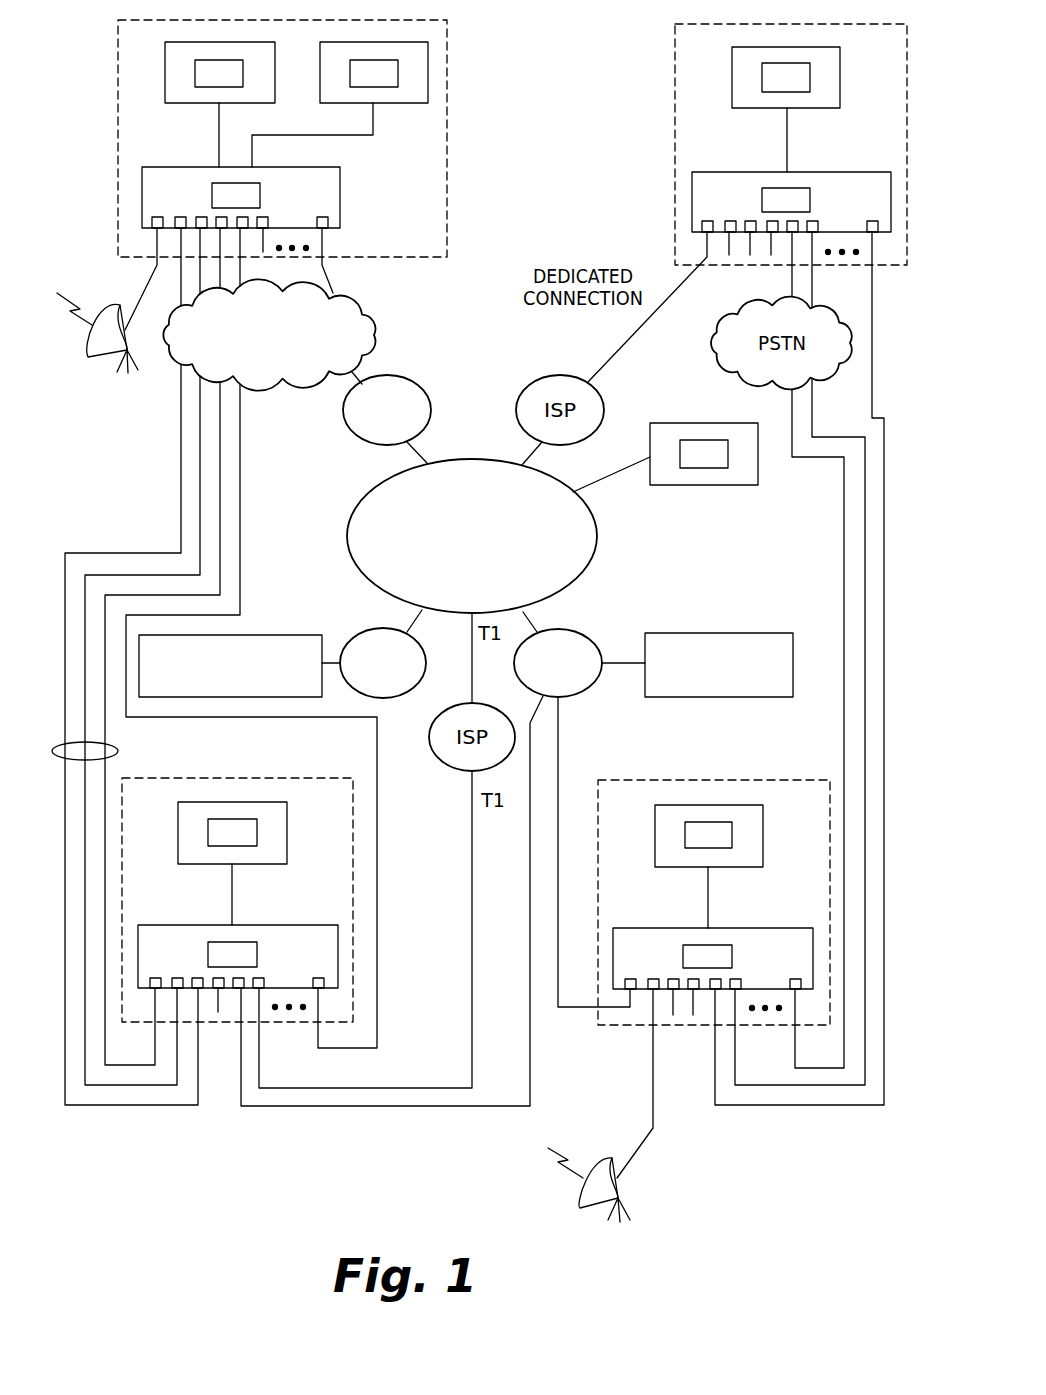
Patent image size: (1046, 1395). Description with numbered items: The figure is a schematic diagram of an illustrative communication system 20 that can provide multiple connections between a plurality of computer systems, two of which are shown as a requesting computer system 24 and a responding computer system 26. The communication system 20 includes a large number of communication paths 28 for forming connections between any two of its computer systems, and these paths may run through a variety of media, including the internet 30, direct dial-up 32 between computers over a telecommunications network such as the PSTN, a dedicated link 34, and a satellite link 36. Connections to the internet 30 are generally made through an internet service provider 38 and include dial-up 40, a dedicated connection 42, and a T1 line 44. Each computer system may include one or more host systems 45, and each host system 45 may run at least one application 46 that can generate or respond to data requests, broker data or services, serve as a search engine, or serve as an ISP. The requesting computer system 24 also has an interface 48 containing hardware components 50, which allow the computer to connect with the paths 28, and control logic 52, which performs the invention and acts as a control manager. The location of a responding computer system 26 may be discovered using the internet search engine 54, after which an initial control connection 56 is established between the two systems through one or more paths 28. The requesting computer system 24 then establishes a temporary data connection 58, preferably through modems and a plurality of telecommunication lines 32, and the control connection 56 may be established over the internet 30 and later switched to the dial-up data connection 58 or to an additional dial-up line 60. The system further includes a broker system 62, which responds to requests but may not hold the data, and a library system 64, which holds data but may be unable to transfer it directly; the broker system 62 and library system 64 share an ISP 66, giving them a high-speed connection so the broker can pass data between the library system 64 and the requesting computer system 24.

The communication system 20 is at (130, 1178).
The requesting computer system 24 is at (447, 148).
The responding computer system 26 is at (212, 778).
The communication paths 28 is at (116, 525).
The internet 30 is at (492, 460).
The direct dial-up 32 is at (118, 751).
The dedicated link 34 is at (872, 398).
The satellite link 36 is at (655, 1122).
The internet service provider 38 is at (677, 423).
The dial-up 40 is at (352, 387).
The dedicated connection 42 is at (623, 348).
The T1 line 44 is at (560, 760).
The host system 45 is at (165, 58).
The application 46 is at (195, 75).
The interface 48 is at (142, 210).
The hardware component 50 is at (157, 217).
The control logic 52 is at (212, 192).
The internet search engine 54 is at (263, 635).
The initial control connection 56 is at (350, 300).
The temporary data connection 58 is at (143, 537).
The additional dial-up line 60 is at (243, 420).
The broker system 62 is at (785, 780).
The library system 64 is at (690, 633).
The ISP 66 is at (575, 630).